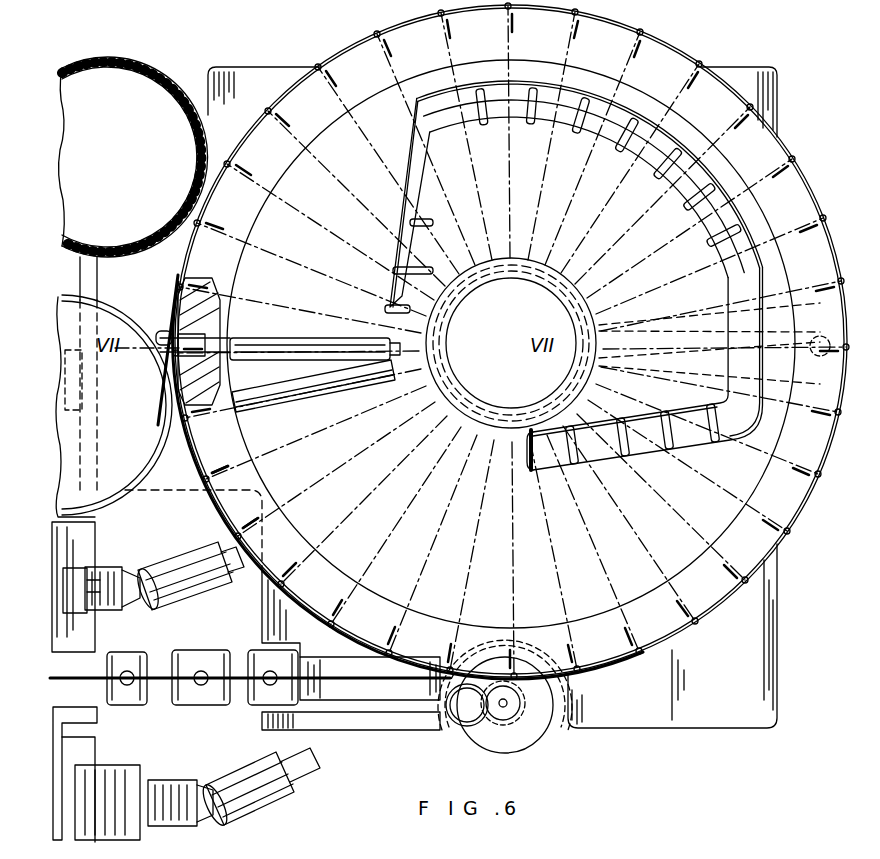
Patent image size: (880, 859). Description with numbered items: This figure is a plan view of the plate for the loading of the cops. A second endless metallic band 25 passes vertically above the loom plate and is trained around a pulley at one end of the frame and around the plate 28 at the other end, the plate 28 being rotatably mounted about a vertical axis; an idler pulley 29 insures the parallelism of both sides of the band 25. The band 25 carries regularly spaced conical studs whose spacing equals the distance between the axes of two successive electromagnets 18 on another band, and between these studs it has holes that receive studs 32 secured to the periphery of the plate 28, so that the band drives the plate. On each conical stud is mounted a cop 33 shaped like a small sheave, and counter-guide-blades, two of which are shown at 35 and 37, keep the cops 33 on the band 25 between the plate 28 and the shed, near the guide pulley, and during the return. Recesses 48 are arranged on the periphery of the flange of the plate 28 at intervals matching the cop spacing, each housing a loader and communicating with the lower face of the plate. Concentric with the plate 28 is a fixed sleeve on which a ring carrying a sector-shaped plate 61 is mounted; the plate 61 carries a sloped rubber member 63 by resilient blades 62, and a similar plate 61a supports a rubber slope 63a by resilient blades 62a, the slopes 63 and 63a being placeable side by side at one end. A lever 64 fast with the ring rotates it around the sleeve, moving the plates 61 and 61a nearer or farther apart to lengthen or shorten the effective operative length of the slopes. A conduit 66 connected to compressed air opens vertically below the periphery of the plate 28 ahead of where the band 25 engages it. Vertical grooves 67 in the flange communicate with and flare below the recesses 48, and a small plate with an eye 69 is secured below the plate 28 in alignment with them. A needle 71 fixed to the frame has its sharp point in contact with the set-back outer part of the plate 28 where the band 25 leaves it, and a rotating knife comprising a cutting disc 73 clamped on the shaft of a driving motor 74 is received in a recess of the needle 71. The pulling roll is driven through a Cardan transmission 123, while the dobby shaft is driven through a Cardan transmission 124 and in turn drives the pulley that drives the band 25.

The electromagnet 18 is at (204, 704).
The second endless metallic band 25 is at (455, 725).
The plate 28 is at (610, 673).
The idler pulley 29 is at (103, 322).
The studs 32 is at (195, 446).
The cop 33 is at (378, 684).
The counter-guide-blade 35 is at (335, 660).
The counter-guide-blade 37 is at (112, 494).
The recess 48 is at (200, 292).
The sector-shaped plate 61 is at (541, 174).
The similar plate 61a is at (640, 392).
The resilient blades 62 is at (410, 249).
The resilient blades 62a is at (685, 440).
The sloped rubber member 63 is at (400, 276).
The rubber slope 63a is at (735, 440).
The lever 64 is at (710, 322).
The conduit 66 is at (170, 340).
The vertical grooves 67 is at (797, 493).
The small plate with an eye 69 is at (214, 512).
The needle 71 is at (652, 668).
The cutting disc 73 is at (502, 718).
The driving motor 74 is at (540, 736).
The Cardan transmission 123 is at (256, 798).
The Cardan transmission 124 is at (183, 556).